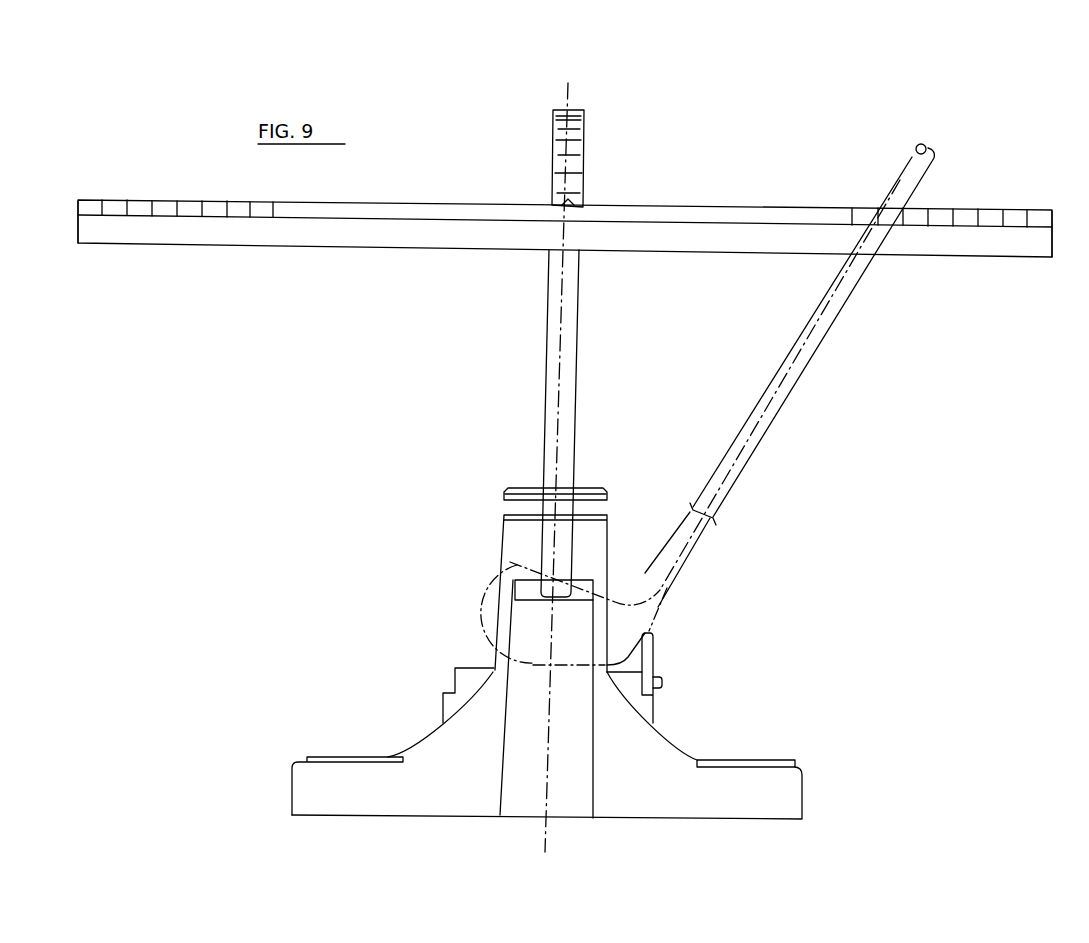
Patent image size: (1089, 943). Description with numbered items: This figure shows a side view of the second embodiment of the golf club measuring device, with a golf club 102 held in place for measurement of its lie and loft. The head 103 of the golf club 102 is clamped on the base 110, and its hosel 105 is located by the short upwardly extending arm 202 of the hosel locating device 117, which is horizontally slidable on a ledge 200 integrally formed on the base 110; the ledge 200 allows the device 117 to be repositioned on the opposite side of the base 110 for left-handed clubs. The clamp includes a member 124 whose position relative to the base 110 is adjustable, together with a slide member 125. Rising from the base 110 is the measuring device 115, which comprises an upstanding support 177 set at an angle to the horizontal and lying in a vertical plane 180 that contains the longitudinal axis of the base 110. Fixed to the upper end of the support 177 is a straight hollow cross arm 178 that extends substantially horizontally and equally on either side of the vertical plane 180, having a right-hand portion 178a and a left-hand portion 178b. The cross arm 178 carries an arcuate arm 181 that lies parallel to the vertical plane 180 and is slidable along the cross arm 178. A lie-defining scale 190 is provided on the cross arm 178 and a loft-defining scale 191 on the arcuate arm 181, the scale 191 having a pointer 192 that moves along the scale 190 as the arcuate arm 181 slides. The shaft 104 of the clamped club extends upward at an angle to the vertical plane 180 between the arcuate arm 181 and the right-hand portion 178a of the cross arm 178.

The golf club 102 is at (818, 388).
The head 103 is at (599, 586).
The shaft 104 is at (748, 447).
The hosel 105 is at (686, 569).
The base 110 is at (394, 724).
The measuring device 115 is at (654, 285).
The hosel locating device 117 is at (680, 683).
The member 124 is at (482, 530).
The slide member 125 is at (597, 530).
The upstanding support 177 is at (548, 342).
The cross arm 178 is at (482, 238).
The right-hand portion of the cross arm 178a is at (1030, 250).
The left-hand portion of the cross arm 178b is at (151, 238).
The vertical plane 180 is at (582, 72).
The arcuate arm 181 is at (584, 138).
The lie-defining scale 190 is at (253, 208).
The loft-defining scale 191 is at (560, 152).
The pointer 192 is at (572, 202).
The ledge 200 is at (660, 688).
The short upwardly extending arm 202 is at (650, 652).